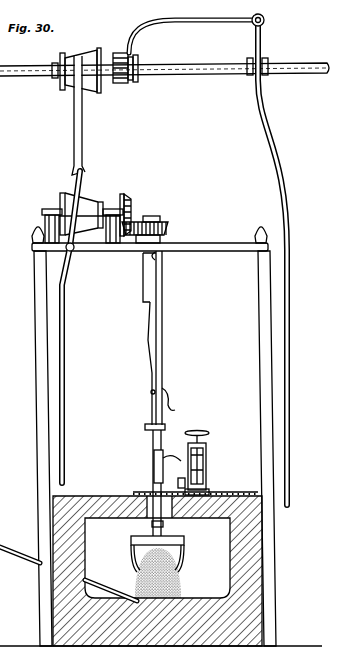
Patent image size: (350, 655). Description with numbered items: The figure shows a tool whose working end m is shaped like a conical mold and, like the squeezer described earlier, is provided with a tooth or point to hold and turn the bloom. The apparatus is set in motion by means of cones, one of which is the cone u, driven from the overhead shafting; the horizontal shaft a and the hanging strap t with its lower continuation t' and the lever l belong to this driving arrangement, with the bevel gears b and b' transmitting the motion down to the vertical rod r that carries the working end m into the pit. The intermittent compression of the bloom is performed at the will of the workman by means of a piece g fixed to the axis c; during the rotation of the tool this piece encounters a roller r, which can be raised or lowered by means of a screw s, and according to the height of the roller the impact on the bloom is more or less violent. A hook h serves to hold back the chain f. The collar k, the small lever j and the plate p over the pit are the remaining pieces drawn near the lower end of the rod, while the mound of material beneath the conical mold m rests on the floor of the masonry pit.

The drive shaft a is at (164, 63).
The lever rod l is at (212, 259).
The cone u is at (89, 141).
The belt strap t is at (75, 151).
The lower belt strap t' is at (67, 365).
The bevel pinion b is at (130, 215).
The bevel gear b' is at (151, 227).
The roller r is at (148, 393).
The chain f is at (160, 337).
The piece g is at (149, 393).
The hook h is at (170, 398).
The collar k is at (151, 426).
The lever j is at (172, 466).
The screw s is at (182, 481).
The plate p is at (195, 487).
The working end m is at (159, 567).
The axis c is at (157, 258).